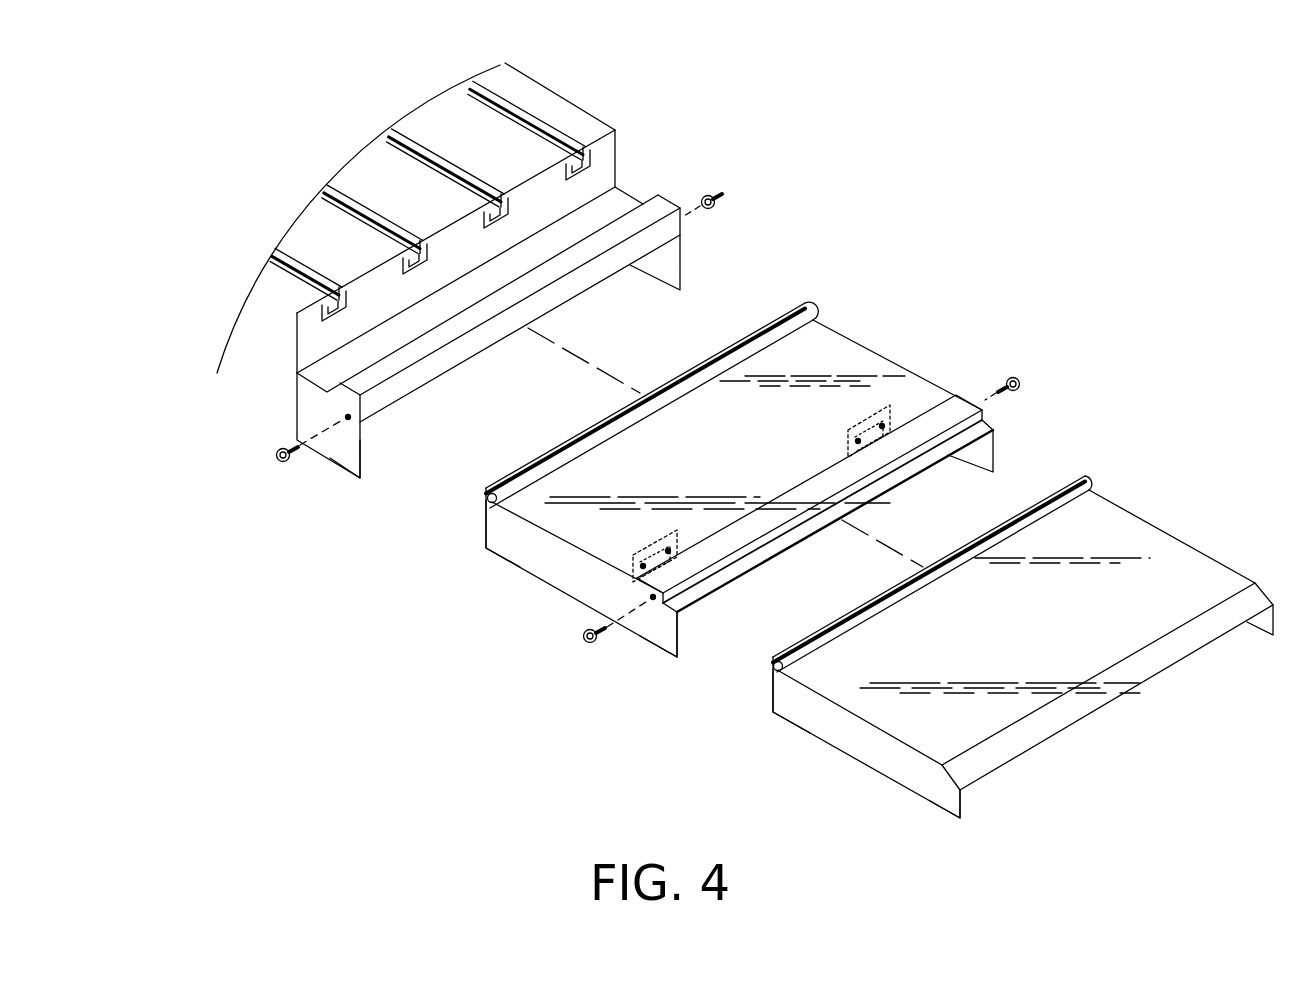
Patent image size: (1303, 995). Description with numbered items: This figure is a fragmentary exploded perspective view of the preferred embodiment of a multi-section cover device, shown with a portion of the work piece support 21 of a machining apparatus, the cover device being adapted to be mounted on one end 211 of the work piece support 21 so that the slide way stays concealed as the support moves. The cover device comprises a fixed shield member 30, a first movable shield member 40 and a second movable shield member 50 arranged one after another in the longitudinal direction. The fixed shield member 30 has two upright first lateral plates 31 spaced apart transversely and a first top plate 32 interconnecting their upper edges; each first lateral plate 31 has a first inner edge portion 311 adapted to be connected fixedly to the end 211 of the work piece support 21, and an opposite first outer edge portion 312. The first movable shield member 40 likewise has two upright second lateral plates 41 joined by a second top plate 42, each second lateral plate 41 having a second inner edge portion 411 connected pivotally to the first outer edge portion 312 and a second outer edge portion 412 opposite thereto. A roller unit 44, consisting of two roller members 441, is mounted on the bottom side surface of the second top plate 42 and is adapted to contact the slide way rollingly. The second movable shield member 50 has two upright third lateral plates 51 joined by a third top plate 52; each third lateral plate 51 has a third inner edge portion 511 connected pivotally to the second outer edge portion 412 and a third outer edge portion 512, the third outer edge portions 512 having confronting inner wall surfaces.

The work piece support 21 is at (390, 175).
The end of the work piece support 211 is at (565, 108).
The fixed shield member 30 is at (645, 182).
The first lateral plate 31 is at (298, 468).
The first inner edge portion 311 is at (305, 406).
The first outer edge portion 312 is at (350, 460).
The first top plate 32 is at (327, 360).
The first movable shield member 40 is at (858, 330).
The second lateral plate 41 is at (535, 572).
The second inner edge portion 411 is at (490, 548).
The second outer edge portion 412 is at (665, 650).
The second top plate 42 is at (765, 362).
The roller unit 44 is at (866, 395).
The roller member 441 is at (872, 494).
The second movable shield member 50 is at (1187, 535).
The third lateral plate 51 is at (850, 755).
The third inner edge portion 511 is at (783, 715).
The third outer edge portion 512 is at (950, 810).
The third top plate 52 is at (1055, 528).